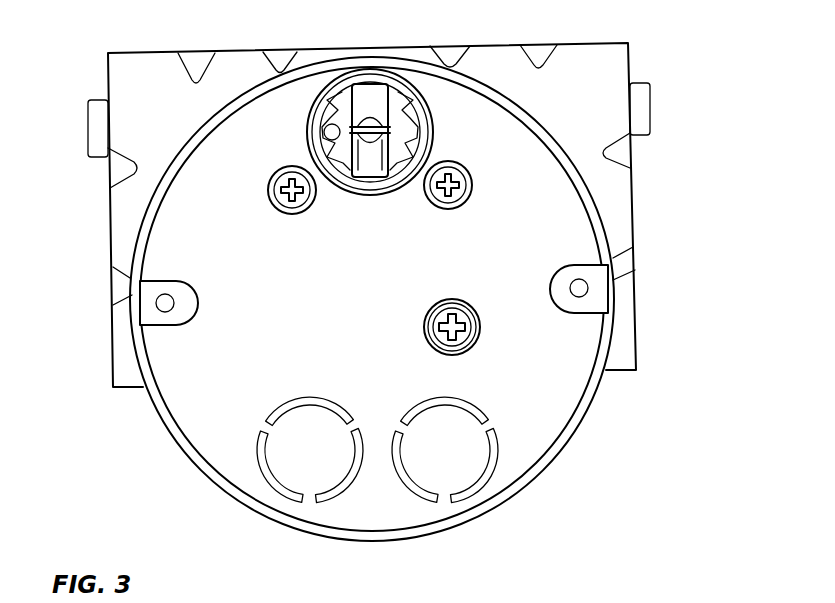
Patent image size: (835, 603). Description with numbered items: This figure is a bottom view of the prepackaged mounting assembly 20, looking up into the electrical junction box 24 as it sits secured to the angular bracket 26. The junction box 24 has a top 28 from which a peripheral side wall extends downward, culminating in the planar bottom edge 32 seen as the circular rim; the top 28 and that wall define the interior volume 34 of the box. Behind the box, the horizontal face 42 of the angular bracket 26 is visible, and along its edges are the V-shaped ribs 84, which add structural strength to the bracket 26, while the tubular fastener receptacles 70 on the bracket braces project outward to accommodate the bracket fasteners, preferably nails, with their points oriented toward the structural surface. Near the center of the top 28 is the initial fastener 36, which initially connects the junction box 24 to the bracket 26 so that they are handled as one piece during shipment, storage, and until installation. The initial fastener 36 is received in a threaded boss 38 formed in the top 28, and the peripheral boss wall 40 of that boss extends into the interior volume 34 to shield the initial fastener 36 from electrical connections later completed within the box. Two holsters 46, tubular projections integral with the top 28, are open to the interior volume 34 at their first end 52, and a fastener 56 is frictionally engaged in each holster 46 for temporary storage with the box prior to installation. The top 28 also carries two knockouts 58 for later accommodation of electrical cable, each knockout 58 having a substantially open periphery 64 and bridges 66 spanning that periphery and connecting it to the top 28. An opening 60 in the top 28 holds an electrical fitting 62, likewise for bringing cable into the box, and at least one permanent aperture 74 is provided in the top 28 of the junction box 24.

The prepackaged mounting assembly 20 is at (672, 198).
The electrical junction box 24 is at (581, 427).
The angular bracket 26 is at (110, 237).
The top 28 is at (300, 315).
The planar bottom edge 32 is at (545, 460).
The interior volume 34 is at (185, 360).
The initial fastener 36 is at (468, 310).
The threaded boss 38 is at (456, 355).
The peripheral boss wall 40 is at (450, 300).
The horizontal face 42 is at (603, 97).
The holster 46 is at (290, 172).
The first end 52 is at (470, 199).
The fastener 56 is at (285, 214).
The knockout 58 is at (270, 405).
The opening 60 is at (433, 112).
The electrical fitting 62 is at (367, 168).
The open periphery 64 is at (300, 394).
The bridge 66 is at (310, 500).
The tubular fastener receptacle 70 is at (97, 128).
The permanent aperture 74 is at (164, 304).
The V-shaped rib 84 is at (193, 56).